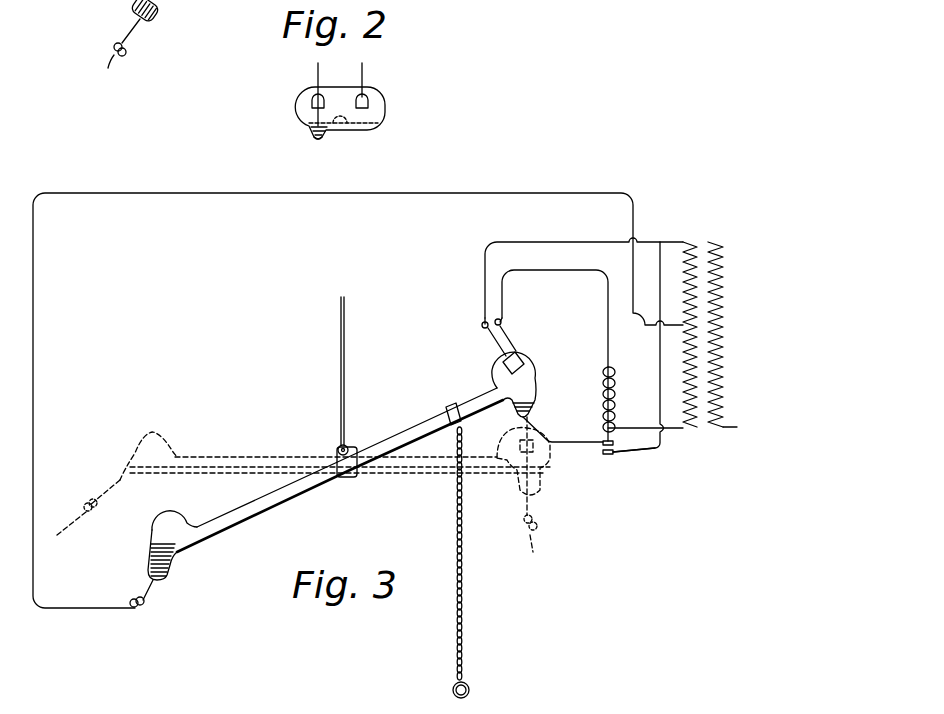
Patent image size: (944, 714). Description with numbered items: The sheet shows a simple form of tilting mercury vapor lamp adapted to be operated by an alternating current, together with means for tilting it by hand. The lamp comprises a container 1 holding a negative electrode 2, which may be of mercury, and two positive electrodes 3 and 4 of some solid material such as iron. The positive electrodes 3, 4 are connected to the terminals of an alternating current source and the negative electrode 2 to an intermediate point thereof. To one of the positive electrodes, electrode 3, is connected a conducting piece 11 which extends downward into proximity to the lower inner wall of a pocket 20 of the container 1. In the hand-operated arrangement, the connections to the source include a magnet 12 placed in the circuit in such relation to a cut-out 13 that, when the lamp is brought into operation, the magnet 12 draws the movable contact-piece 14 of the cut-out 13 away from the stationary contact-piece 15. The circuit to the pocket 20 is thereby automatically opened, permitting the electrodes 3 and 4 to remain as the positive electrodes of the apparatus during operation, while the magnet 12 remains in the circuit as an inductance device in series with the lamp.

In FIG. 3, the container 1 is at (325, 484).
In FIG. 2, the negative electrode 2 is at (141, 34).
In FIG. 2, the positive electrode 3 is at (321, 97).
In FIG. 2, the positive electrode 4 is at (368, 97).
In FIG. 2, the conducting piece 11 is at (300, 118).
In FIG. 3, the magnet 12 is at (596, 404).
In FIG. 3, the cut-out 13 is at (595, 454).
In FIG. 3, the movable contact-piece 14 is at (606, 442).
In FIG. 3, the stationary contact-piece 15 is at (609, 453).
In FIG. 2, the pocket 20 is at (323, 136).
In FIG. 3, the pocket 20 is at (537, 402).